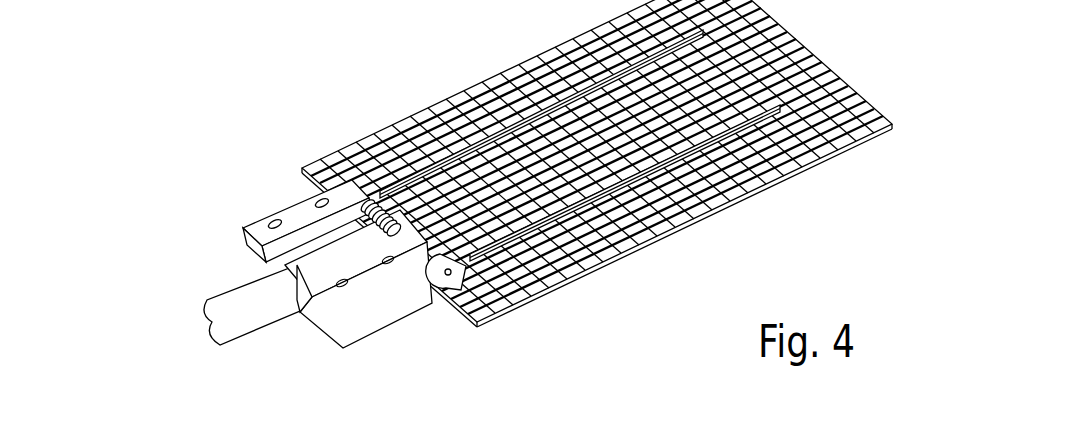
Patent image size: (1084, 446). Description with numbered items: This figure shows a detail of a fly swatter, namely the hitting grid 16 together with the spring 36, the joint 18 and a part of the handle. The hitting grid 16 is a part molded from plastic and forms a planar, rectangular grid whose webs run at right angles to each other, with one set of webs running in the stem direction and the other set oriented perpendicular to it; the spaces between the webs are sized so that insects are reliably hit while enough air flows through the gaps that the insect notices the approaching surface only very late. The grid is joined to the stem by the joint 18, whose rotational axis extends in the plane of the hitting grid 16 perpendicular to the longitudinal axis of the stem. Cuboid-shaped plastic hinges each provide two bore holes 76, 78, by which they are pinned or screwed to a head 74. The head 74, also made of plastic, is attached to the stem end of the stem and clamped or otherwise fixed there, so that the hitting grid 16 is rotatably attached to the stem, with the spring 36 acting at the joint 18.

The hitting grid 16 is at (727, 203).
The joint 18 is at (335, 313).
The spring 36 is at (394, 204).
The head 74 is at (358, 323).
The bore hole 76 is at (340, 286).
The bore hole 78 is at (389, 265).